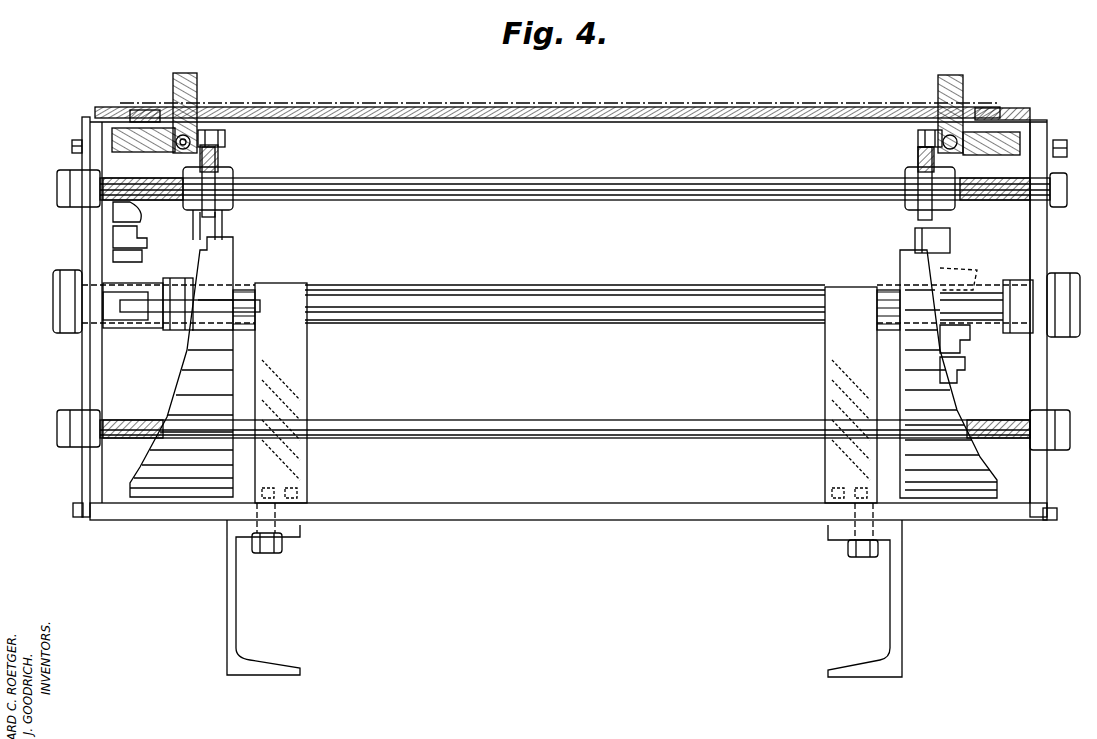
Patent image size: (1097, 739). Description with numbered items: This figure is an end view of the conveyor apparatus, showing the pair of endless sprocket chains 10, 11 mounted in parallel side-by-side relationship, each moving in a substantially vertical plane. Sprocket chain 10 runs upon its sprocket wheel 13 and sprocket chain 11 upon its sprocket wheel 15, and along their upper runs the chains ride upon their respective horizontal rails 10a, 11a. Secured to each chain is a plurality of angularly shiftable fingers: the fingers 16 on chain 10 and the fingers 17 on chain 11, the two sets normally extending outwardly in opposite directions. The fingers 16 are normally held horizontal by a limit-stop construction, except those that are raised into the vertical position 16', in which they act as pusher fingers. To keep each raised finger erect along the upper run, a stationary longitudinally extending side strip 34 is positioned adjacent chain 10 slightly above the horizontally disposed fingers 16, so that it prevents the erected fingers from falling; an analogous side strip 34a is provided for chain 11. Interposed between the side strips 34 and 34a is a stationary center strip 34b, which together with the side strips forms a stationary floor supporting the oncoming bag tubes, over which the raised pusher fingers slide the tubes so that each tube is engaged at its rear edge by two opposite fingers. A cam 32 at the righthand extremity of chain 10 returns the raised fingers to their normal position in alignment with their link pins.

The sprocket chain 10 is at (225, 141).
The horizontal rail 10a is at (220, 160).
The sprocket chain 11 is at (915, 140).
The horizontal rail 11a is at (918, 160).
The sprocket wheel 13 is at (205, 228).
The sprocket wheel 15 is at (915, 233).
The finger 16 is at (151, 149).
The vertical position of finger 16' is at (208, 110).
The finger 17 is at (978, 150).
The cam 32 is at (157, 328).
The side strip 34 is at (95, 108).
The side strip 34a is at (1036, 120).
The center strip 34b is at (385, 107).